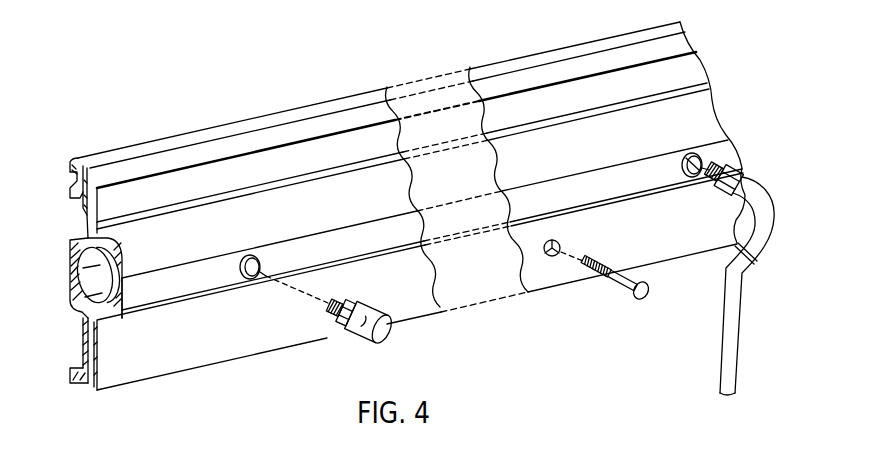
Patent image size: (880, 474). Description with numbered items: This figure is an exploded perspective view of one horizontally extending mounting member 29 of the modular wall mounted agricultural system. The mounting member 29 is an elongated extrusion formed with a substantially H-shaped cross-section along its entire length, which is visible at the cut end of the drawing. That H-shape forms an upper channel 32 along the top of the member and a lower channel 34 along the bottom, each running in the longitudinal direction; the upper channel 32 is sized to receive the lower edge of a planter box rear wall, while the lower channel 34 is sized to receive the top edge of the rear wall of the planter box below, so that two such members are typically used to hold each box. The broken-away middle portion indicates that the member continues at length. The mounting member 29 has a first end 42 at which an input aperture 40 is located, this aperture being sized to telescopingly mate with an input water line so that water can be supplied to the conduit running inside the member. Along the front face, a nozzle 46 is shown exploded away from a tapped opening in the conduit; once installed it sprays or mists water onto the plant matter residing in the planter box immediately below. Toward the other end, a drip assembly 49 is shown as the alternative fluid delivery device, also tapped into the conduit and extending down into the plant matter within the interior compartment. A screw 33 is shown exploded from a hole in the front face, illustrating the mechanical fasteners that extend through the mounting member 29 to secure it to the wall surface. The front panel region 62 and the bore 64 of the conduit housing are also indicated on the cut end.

The mounting member 29 is at (220, 78).
The upper channel 32 is at (110, 180).
The screw 33 is at (648, 302).
The lower channel 34 is at (88, 378).
The input aperture 40 is at (82, 305).
The first end 42 is at (70, 252).
The nozzle 46 is at (390, 343).
The drip assembly 49 is at (740, 335).
The front panel 62 is at (172, 347).
The bore 64 is at (70, 291).